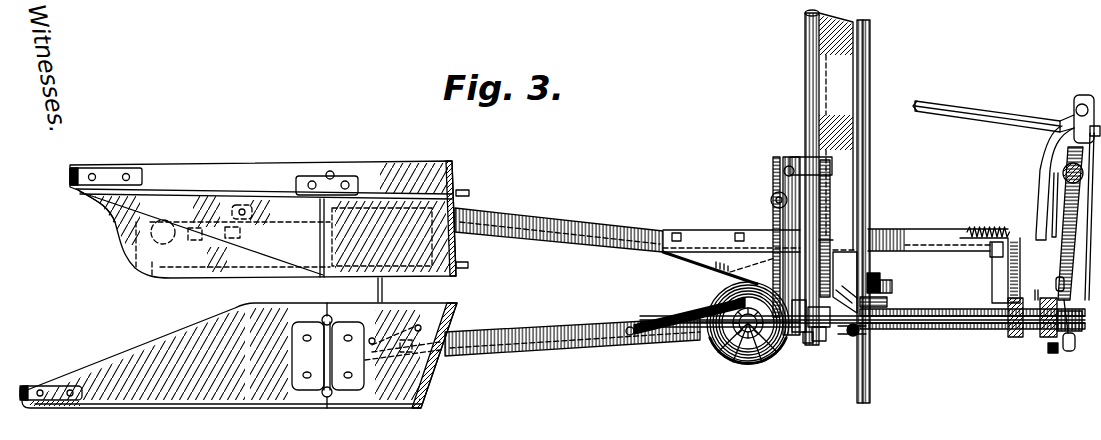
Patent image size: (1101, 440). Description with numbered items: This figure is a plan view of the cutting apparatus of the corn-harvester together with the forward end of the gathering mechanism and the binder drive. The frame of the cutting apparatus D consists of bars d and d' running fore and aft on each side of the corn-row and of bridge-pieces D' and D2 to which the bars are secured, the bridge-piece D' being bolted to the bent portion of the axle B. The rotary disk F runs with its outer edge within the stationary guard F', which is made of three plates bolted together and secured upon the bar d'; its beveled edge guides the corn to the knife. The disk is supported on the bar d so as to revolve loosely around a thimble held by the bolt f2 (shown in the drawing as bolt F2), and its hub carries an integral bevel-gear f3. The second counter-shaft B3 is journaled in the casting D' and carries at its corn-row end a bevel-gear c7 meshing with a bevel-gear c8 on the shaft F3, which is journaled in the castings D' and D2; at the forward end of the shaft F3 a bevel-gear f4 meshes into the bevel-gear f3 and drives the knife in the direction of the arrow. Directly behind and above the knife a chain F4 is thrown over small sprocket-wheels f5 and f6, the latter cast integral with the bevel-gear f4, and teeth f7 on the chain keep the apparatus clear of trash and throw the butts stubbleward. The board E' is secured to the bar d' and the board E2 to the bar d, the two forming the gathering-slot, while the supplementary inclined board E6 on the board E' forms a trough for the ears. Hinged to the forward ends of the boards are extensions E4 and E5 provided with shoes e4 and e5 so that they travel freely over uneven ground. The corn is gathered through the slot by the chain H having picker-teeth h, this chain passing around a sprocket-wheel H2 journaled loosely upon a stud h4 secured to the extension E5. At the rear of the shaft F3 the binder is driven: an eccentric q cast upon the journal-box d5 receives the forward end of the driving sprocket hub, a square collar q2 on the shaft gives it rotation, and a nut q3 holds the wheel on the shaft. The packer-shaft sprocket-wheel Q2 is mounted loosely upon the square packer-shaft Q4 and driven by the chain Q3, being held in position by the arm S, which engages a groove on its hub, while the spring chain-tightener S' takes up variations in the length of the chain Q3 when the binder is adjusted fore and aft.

The hinged extension E5 is at (218, 172).
The board E' is at (388, 204).
The supplementary inclined board E6 is at (462, 204).
The chain H is at (468, 266).
The sprocket-wheel H2 is at (138, 272).
The stud h4 is at (152, 279).
The picker-teeth h is at (389, 290).
The shoe e5 is at (80, 190).
The hinged extension E4 is at (239, 355).
The board E2 is at (408, 397).
The shoe e4 is at (34, 410).
The bar d' is at (559, 222).
The frame of the cutting apparatus D is at (820, 271).
The stationary guard F' is at (719, 274).
The bar d is at (572, 330).
The bolt F2 is at (686, 347).
The rotary disk F is at (748, 344).
The bevel-gear f3 is at (708, 355).
The bolt f2 is at (745, 336).
The bevel-gear f4 is at (773, 342).
The sprocket-wheel f6 is at (788, 338).
The bridge-piece D' is at (809, 358).
The bevel-gear c8 is at (851, 338).
The bevel-gear c7 is at (885, 288).
The axle B is at (862, 392).
The second counter-shaft B3 is at (868, 96).
The chain F4 is at (786, 165).
The sprocket-wheel f5 is at (782, 178).
The teeth f7 is at (772, 205).
The packer-shaft Q4 is at (986, 105).
The packer-shaft sprocket-wheel Q2 is at (1080, 104).
The nut q3 is at (1070, 340).
The arm S is at (1045, 183).
The spring chain-tightener S' is at (1036, 205).
The chain Q3 is at (1060, 247).
The bridge-piece D2 is at (1002, 277).
The shaft F3 is at (928, 331).
The journal-box d5 is at (1009, 333).
The eccentric q is at (1037, 335).
The lever shaft hub q' is at (1056, 349).
The square collar q2 is at (1056, 355).